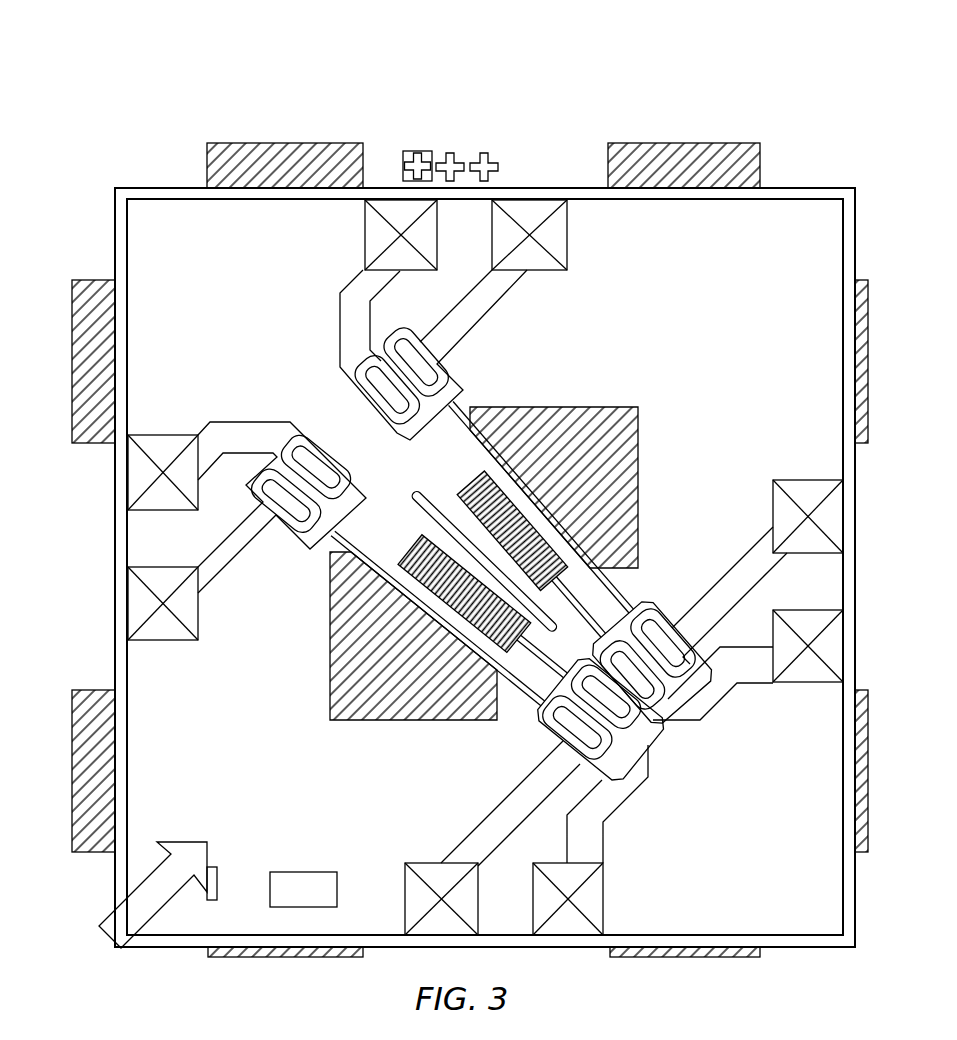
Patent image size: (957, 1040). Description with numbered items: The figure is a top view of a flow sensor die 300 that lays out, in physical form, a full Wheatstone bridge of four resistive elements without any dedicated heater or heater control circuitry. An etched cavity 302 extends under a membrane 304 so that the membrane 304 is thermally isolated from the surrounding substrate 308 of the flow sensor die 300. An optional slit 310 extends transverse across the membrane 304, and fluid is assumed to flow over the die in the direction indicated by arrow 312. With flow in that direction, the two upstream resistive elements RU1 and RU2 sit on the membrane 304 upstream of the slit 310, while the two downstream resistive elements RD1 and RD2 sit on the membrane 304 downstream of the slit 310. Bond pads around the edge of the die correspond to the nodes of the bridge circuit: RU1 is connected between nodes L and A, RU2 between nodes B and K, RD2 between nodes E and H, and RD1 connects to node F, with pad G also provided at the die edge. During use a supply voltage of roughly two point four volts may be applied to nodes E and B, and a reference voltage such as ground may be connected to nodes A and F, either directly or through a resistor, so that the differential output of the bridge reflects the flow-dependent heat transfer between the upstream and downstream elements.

The flow sensor die 300 is at (477, 490).
The etched cavity 302 is at (498, 565).
The membrane 304 is at (554, 550).
The substrate 308 is at (812, 244).
The slit 310 is at (494, 578).
The arrow 312 is at (127, 895).
The downstream resistive element RD1 is at (582, 471).
The downstream resistive element RD2 is at (481, 514).
The upstream resistive element RU1 is at (403, 649).
The upstream resistive element RU2 is at (465, 573).
The node A is at (163, 625).
The node B is at (162, 450).
The node E is at (365, 237).
The node F is at (567, 236).
The bond pad G is at (810, 497).
The node H is at (810, 667).
The node K is at (603, 900).
The node L is at (405, 900).